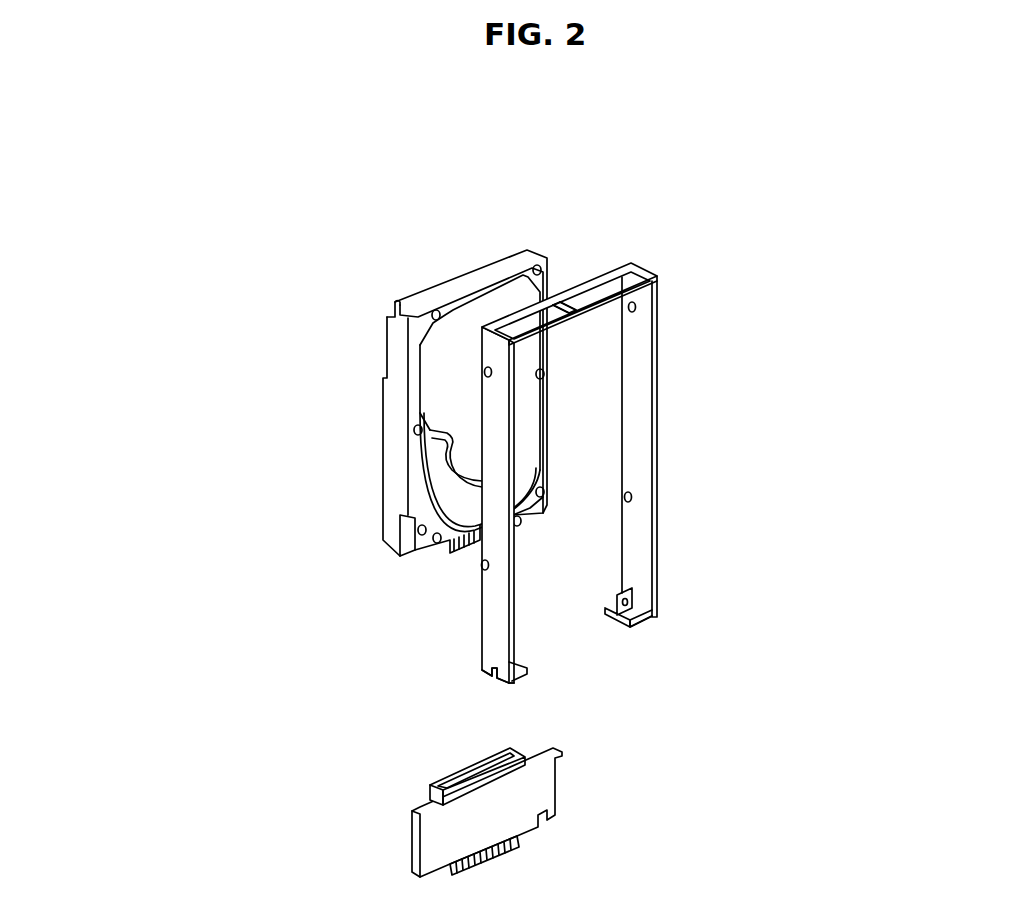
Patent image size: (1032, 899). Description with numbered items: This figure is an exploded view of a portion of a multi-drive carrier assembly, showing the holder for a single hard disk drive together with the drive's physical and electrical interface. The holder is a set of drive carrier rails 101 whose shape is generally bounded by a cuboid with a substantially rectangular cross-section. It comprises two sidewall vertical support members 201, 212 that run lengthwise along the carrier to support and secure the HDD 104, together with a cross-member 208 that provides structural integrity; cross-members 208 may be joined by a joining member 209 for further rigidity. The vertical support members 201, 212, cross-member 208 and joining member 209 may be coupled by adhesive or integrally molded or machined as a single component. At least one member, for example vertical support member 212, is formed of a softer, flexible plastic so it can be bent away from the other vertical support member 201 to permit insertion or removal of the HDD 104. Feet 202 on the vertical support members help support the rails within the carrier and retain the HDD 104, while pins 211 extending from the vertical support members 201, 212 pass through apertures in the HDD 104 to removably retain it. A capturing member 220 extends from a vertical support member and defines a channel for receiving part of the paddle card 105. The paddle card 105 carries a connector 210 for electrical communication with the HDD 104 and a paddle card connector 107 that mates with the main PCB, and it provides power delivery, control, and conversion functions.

The set of drive carrier rails 101 is at (641, 212).
The HDD 104 is at (387, 355).
The paddle card 105 is at (557, 787).
The paddle card connector 107 is at (505, 853).
The vertical support member 201 is at (475, 646).
The feet 202 is at (508, 670).
The cross-member 208 is at (614, 290).
The joining member 209 is at (567, 297).
The connector 210 is at (433, 779).
The pins 211 is at (482, 563).
The vertical support member 212 is at (655, 550).
The capturing member 220 is at (612, 598).